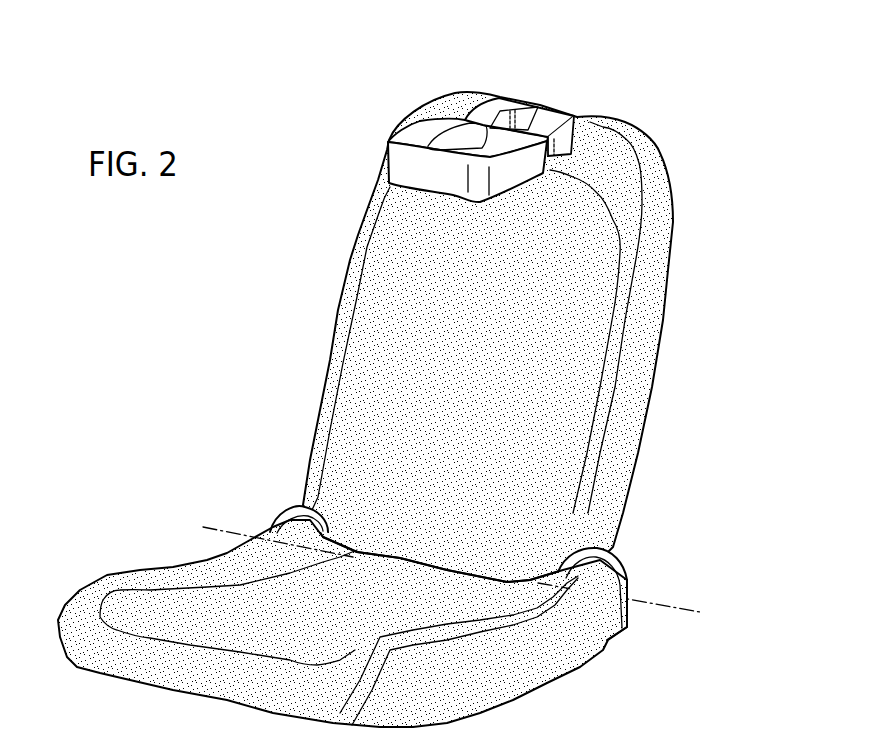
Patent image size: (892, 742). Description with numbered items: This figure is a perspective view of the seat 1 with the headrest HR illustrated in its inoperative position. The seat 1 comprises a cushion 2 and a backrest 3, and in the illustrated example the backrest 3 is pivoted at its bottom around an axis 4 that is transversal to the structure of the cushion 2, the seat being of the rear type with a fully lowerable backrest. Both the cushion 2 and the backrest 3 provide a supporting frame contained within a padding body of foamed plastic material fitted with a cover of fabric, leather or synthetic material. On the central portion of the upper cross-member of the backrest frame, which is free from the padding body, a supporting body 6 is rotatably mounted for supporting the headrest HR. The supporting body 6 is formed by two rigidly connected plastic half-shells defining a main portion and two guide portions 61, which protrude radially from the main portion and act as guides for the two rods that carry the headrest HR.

The seat 1 is at (117, 341).
The cushion 2 is at (143, 562).
The backrest 3 is at (326, 358).
The axis 4 is at (652, 600).
The supporting body 6 is at (539, 100).
The guide portions 61 is at (487, 117).
The headrest HR is at (382, 141).